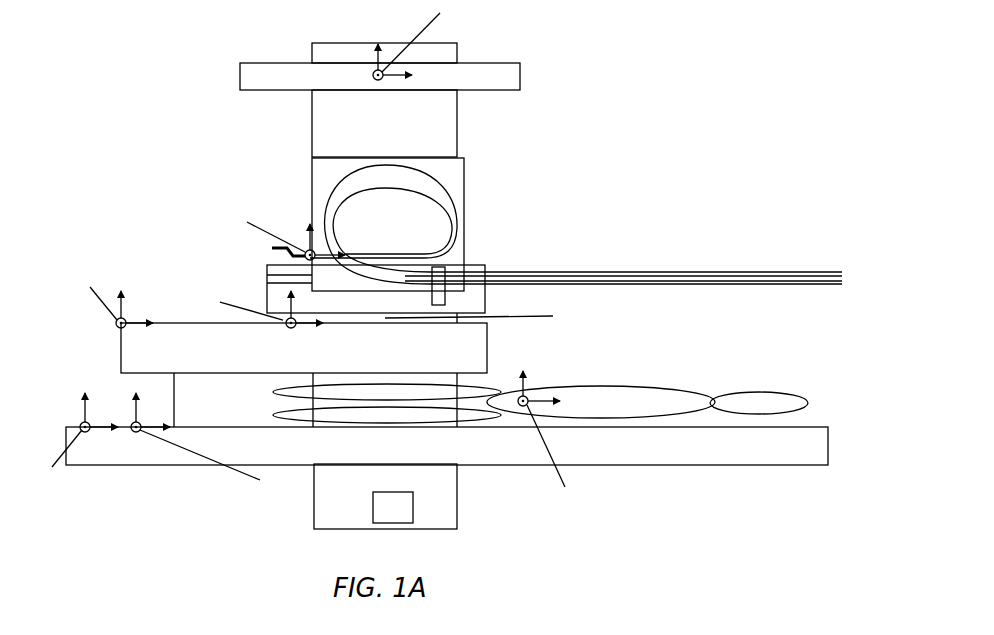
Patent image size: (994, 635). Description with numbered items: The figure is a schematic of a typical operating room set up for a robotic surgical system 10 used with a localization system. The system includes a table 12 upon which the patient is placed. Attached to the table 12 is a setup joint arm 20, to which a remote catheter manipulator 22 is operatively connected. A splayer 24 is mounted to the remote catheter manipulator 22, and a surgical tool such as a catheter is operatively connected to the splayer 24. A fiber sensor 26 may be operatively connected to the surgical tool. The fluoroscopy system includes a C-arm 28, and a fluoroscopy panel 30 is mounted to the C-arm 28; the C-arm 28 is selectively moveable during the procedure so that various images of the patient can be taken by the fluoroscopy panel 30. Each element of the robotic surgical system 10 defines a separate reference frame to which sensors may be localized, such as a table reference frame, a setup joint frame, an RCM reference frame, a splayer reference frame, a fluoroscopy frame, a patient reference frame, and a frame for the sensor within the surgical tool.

The robotic surgical system 10 is at (242, 120).
The table 12 is at (185, 458).
The setup joint arm 20 is at (158, 387).
The remote catheter manipulator 22 is at (488, 352).
The splayer 24 is at (290, 318).
The fiber sensor 26 is at (313, 245).
The C-arm 28 is at (457, 126).
The fluoroscopy panel 30 is at (502, 62).